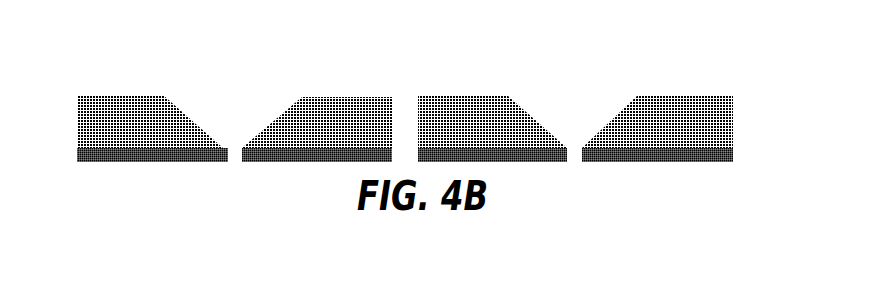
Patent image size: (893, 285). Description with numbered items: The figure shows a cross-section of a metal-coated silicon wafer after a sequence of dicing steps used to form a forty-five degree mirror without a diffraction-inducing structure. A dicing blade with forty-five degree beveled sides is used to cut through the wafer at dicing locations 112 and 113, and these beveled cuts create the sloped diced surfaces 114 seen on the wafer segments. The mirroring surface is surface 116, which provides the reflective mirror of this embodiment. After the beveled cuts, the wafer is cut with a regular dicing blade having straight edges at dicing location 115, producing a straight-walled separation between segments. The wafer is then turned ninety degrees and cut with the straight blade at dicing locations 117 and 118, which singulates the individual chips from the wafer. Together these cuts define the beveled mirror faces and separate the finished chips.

The dicing location 112 is at (578, 100).
The dicing location 113 is at (224, 96).
The diced surface 114 is at (627, 112).
The dicing location 115 is at (396, 84).
The mirroring surface 116 is at (726, 170).
The dicing location 117 is at (240, 181).
The dicing location 118 is at (571, 175).